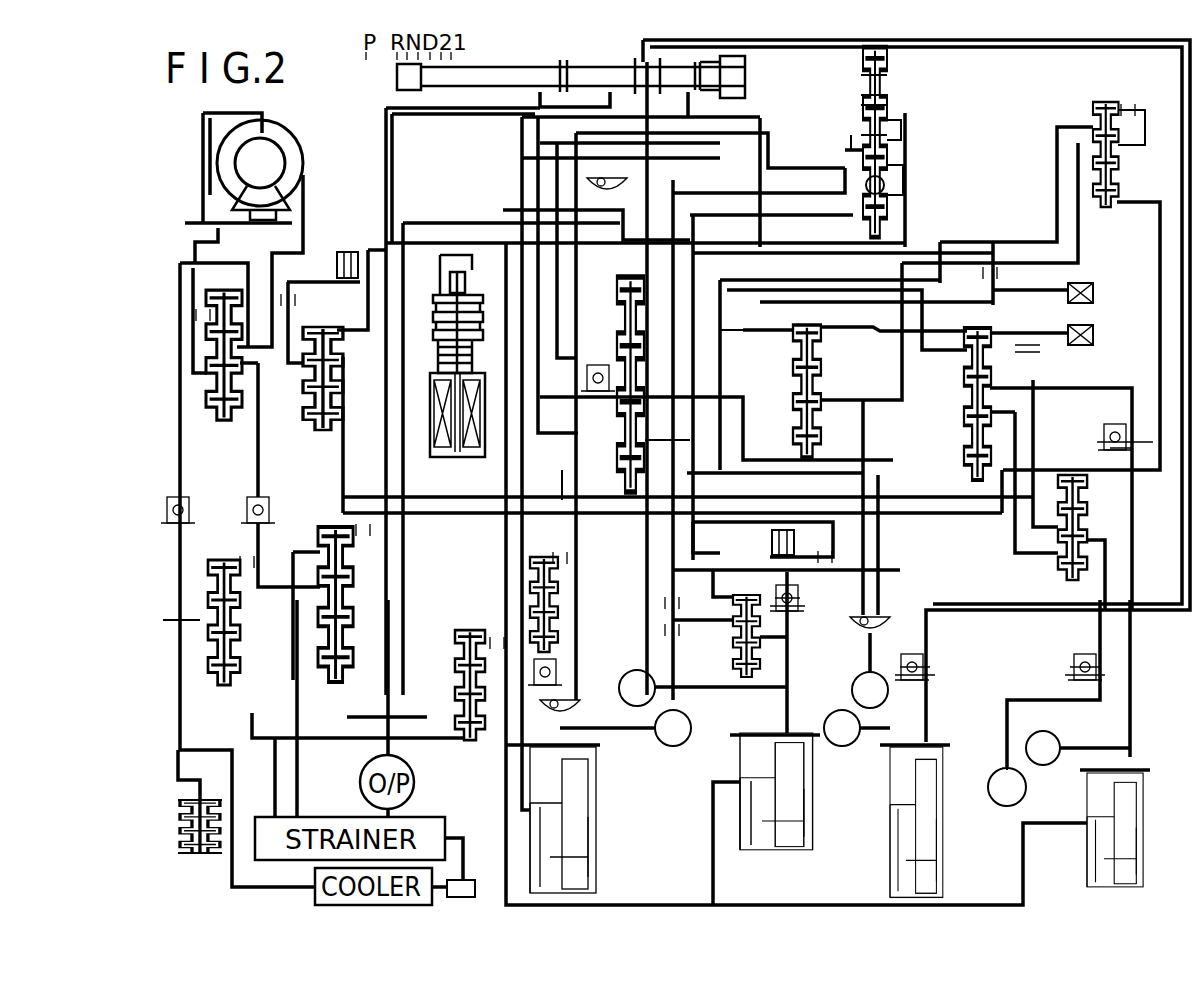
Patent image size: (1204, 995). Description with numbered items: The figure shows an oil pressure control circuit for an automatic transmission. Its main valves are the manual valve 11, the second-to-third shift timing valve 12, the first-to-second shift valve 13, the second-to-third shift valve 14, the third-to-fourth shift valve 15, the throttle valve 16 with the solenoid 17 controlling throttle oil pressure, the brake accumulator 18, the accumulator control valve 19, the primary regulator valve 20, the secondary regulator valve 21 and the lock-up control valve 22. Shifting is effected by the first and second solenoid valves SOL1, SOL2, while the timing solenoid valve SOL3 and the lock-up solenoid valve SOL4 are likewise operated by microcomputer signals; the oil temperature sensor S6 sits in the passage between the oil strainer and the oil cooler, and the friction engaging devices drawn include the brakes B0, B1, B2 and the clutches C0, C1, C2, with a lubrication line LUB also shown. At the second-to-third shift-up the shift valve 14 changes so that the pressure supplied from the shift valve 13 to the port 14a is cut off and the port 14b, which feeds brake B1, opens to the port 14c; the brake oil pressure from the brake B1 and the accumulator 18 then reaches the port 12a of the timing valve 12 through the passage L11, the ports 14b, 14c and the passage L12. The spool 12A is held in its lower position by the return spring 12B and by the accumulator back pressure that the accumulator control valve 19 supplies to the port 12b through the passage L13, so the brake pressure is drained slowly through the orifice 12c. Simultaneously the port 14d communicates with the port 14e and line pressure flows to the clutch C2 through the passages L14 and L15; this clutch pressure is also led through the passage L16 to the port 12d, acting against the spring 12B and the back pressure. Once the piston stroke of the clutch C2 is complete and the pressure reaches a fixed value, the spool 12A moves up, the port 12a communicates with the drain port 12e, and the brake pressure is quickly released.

The manual valve 11 is at (571, 67).
The 2→3 shift timing valve 12 is at (860, 66).
The spool 12A is at (861, 96).
The return spring 12B is at (889, 75).
The port 12a is at (861, 135).
The port 12b is at (889, 105).
The orifice 12c is at (903, 178).
The port 12d is at (886, 190).
The drain port 12e is at (903, 130).
The 1→2 shift valve 13 is at (818, 420).
The 2→3 shift valve 14 is at (617, 300).
The port 14a is at (720, 345).
The port 14b is at (604, 372).
The port 14c is at (640, 260).
The port 14d is at (551, 586).
The port 14e is at (770, 452).
The 3→4 shift valve 15 is at (964, 375).
The throttle valve 16 is at (440, 300).
The solenoid controlling throttle oil pressure 17 is at (487, 445).
The brake B1 accumulator 18 is at (813, 790).
The accumulator control valve 19 is at (485, 733).
The primary regulator valve 20 is at (345, 662).
The secondary regulator valve 21 is at (243, 660).
The lock-up control valve 22 is at (238, 418).
The passage L11 is at (672, 545).
The passage L12 is at (703, 170).
The passage L13 is at (905, 222).
The passage L14 is at (560, 200).
The passage L15 is at (548, 503).
The passage L16 is at (668, 633).
The first solenoid valve SOL1 is at (1093, 346).
The second solenoid valve SOL2 is at (1100, 300).
The timing solenoid valve SOL3 is at (771, 540).
The solenoid valve to control the lock-up SOL4 is at (343, 251).
The oil temperature sensor S6 is at (470, 878).
The lubrication line LUB is at (205, 607).
The brake B0 is at (1084, 809).
The brake B1 is at (703, 688).
The brake B2 is at (897, 784).
The clutch C0 is at (1007, 786).
The clutch C1 is at (842, 728).
The clutch C2 is at (610, 801).